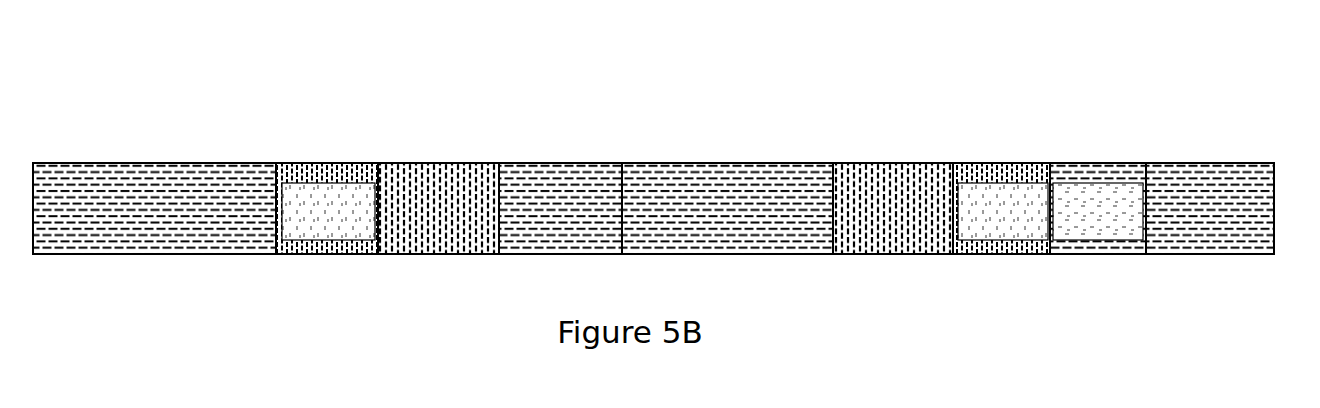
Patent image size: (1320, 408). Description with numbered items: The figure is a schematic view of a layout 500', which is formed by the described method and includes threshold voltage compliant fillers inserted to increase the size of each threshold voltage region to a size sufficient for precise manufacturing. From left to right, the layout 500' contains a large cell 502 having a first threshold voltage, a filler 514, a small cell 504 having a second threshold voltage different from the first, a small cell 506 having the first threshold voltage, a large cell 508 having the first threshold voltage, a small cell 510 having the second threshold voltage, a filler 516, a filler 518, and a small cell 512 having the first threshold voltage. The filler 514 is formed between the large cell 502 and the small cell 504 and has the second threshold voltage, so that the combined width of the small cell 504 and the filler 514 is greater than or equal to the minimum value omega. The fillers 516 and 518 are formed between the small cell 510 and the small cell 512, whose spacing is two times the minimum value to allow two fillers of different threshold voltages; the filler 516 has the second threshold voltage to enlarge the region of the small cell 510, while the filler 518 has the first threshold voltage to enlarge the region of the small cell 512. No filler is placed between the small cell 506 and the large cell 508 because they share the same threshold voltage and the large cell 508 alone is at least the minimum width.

The layout 500' is at (664, 142).
The large cell 502 is at (121, 163).
The filler 514 is at (325, 163).
The small cell 504 is at (443, 163).
The small cell 506 is at (565, 163).
The large cell 508 is at (730, 163).
The small cell 510 is at (898, 163).
The filler 516 is at (1005, 163).
The filler 518 is at (1103, 163).
The small cell 512 is at (1213, 163).